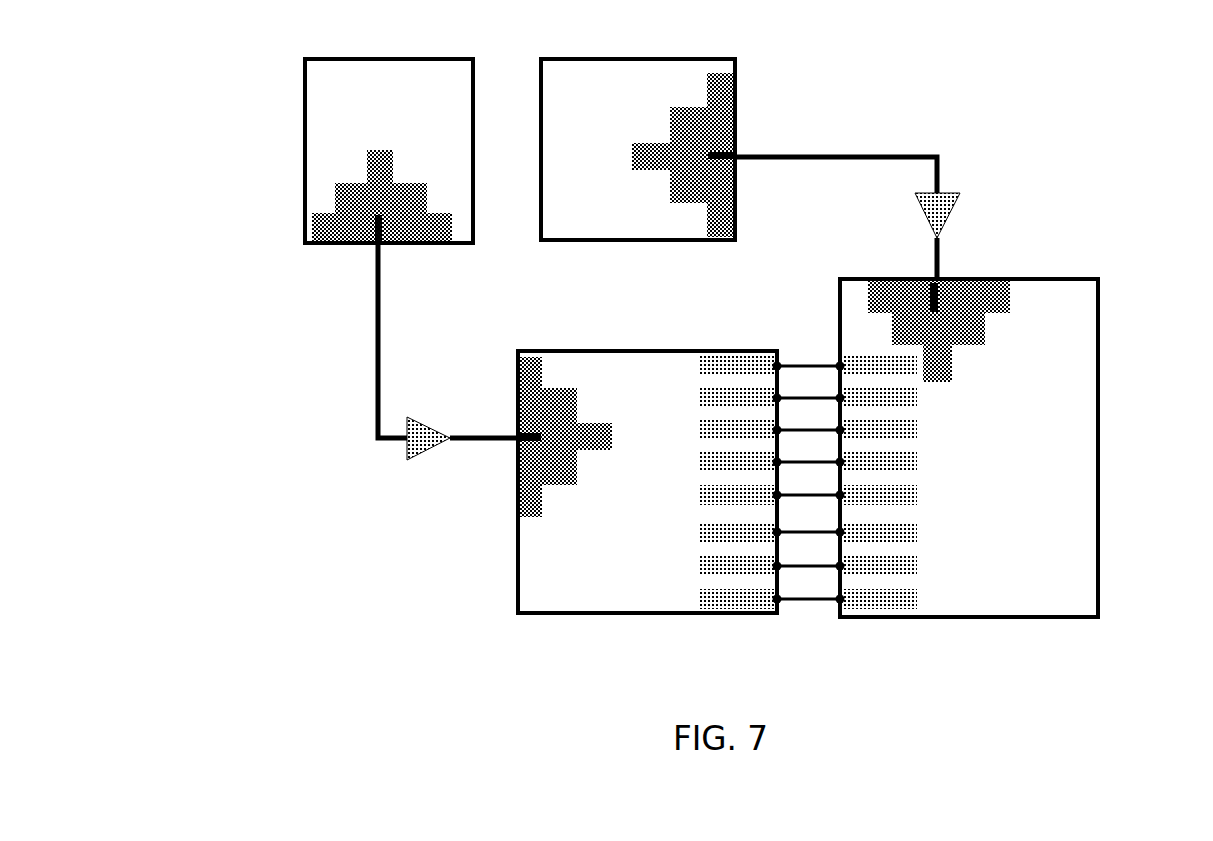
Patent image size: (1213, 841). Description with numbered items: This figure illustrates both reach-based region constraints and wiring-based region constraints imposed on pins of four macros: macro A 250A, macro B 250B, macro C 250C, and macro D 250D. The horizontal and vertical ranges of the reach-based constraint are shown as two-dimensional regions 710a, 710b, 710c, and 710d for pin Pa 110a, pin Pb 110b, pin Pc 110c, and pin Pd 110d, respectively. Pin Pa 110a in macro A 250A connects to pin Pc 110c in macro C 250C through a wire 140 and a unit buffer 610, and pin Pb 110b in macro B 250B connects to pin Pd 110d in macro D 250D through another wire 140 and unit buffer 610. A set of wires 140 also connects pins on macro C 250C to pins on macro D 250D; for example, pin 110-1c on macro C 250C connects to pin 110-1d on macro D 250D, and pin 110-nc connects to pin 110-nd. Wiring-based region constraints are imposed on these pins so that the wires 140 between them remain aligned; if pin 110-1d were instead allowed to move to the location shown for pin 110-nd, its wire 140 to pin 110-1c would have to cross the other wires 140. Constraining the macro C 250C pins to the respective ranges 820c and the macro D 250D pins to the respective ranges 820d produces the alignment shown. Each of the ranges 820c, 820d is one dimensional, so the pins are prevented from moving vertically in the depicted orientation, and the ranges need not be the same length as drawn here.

The macro A 250A is at (288, 130).
The macro B 250B is at (747, 83).
The macro C 250C is at (508, 552).
The macro D 250D is at (1112, 543).
The two-dimensional region 710a is at (328, 180).
The two-dimensional region 710b is at (630, 190).
The two-dimensional region 710c is at (577, 375).
The two-dimensional region 710d is at (995, 352).
The pin Pa 110a is at (372, 248).
The pin Pb 110b is at (737, 160).
The pin Pc 110c is at (517, 435).
The pin Pd 110d is at (920, 277).
The pin 110-nc is at (772, 358).
The pin 110-nd is at (837, 362).
The pin 110-1c is at (762, 601).
The pin 110-1d is at (847, 602).
The wire 140 is at (373, 373).
The unit buffer 610 is at (423, 455).
The range 820c is at (698, 433).
The range 820d is at (918, 530).